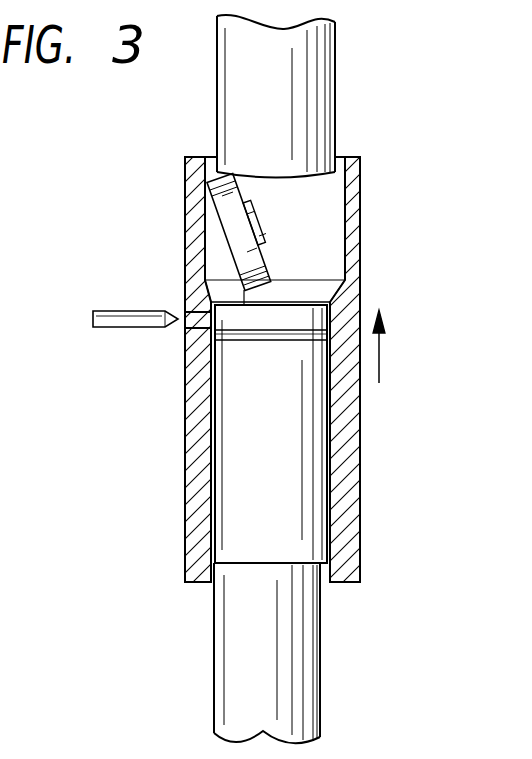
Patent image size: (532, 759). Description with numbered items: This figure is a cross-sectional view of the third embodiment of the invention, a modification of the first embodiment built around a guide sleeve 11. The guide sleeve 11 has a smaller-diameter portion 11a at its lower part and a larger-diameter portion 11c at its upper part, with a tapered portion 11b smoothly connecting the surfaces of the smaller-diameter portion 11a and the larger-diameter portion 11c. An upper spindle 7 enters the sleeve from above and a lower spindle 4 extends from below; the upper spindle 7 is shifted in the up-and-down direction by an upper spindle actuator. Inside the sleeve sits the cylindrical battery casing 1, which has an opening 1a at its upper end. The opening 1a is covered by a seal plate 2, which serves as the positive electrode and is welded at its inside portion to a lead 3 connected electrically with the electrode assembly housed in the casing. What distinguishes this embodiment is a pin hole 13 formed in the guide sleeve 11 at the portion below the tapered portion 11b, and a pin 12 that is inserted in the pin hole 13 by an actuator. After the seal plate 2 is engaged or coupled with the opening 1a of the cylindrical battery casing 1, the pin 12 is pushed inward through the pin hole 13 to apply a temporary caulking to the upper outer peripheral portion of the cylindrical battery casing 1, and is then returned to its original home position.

The cylindrical battery casing 1 is at (312, 434).
The opening 1a is at (302, 302).
The seal plate 2 is at (230, 212).
The lead 3 is at (272, 291).
The lower spindle 4 is at (232, 622).
The upper spindle 7 is at (316, 78).
The guide sleeve 11 is at (197, 476).
The smaller-diameter portion 11a is at (326, 497).
The tapered portion 11b is at (339, 296).
The larger-diameter portion 11c is at (338, 221).
The pin 12 is at (127, 319).
The pin hole 13 is at (185, 330).